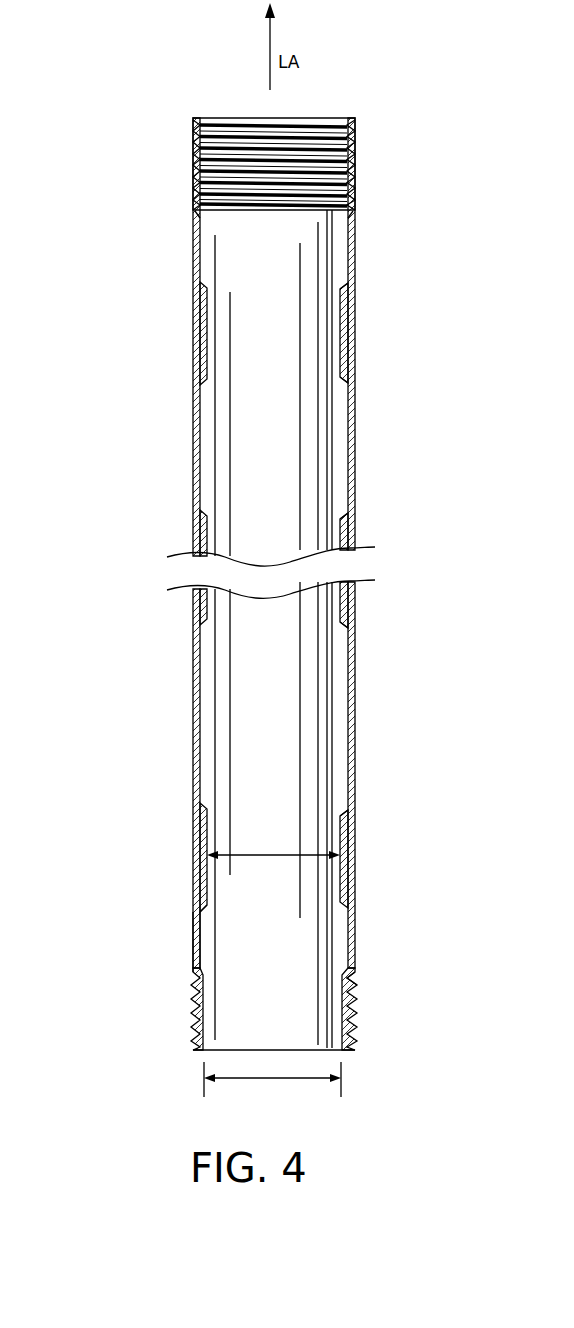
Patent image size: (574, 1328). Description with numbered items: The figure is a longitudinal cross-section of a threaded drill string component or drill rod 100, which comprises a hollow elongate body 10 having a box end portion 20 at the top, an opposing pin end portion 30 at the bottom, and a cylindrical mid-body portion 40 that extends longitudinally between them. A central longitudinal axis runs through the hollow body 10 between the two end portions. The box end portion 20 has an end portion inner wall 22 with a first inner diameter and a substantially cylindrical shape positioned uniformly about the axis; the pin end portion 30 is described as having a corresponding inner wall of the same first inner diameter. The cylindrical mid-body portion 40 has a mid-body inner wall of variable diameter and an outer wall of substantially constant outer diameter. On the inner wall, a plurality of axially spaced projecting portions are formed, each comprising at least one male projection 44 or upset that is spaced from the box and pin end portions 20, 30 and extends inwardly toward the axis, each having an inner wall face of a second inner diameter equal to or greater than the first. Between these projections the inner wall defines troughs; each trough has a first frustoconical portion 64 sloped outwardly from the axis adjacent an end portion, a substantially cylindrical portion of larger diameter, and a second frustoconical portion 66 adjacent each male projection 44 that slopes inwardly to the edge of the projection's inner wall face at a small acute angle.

The hollow elongate body 10 is at (366, 424).
The box end portion 20 is at (366, 150).
The end portion inner wall 22 is at (194, 182).
The pin end portion 30 is at (368, 1018).
The cylindrical mid-body portion 40 is at (193, 961).
The male projection 44 is at (200, 346).
The first frustoconical portion 64 is at (351, 966).
The second frustoconical portion 66 is at (346, 286).
The threaded drill string component or drill rod 100 is at (133, 588).